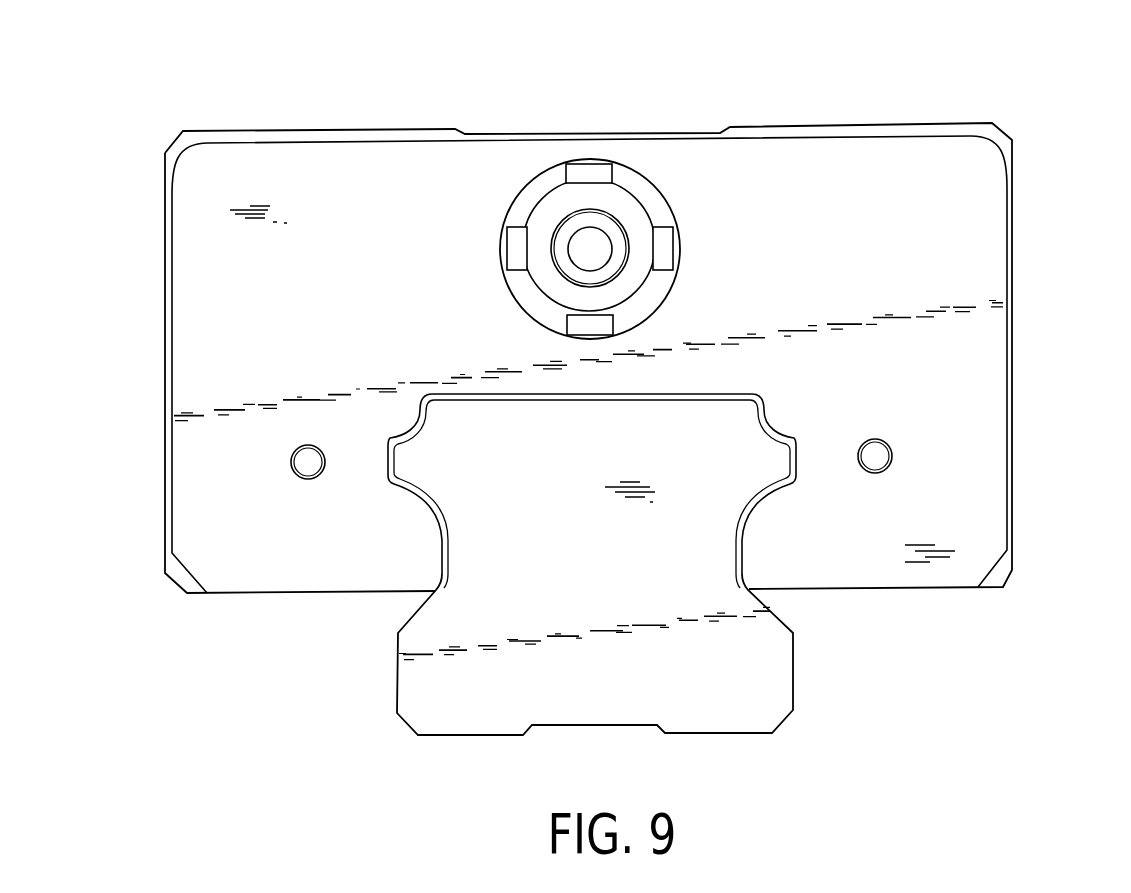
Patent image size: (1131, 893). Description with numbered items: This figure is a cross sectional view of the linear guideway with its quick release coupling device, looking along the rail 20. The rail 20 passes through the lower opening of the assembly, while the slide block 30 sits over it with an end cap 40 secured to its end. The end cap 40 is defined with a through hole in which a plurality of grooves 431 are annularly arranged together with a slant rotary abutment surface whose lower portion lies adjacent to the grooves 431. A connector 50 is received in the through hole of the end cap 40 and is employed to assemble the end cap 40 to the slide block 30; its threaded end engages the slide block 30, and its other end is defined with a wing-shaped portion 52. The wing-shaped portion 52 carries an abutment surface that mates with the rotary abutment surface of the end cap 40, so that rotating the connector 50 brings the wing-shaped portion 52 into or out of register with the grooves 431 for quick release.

The rail 20 is at (767, 650).
The slide block 30 is at (943, 125).
The end cap 40 is at (988, 358).
The connector 50 is at (620, 205).
The wing-shaped portion 52 is at (517, 233).
The groove 431 is at (592, 168).